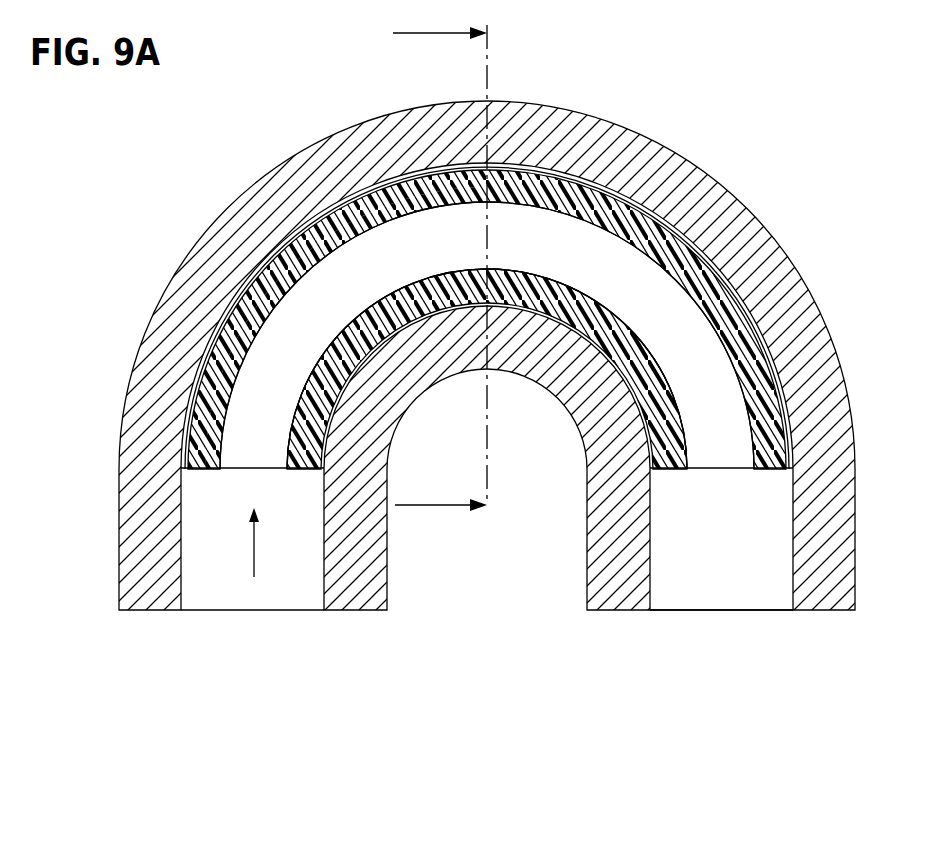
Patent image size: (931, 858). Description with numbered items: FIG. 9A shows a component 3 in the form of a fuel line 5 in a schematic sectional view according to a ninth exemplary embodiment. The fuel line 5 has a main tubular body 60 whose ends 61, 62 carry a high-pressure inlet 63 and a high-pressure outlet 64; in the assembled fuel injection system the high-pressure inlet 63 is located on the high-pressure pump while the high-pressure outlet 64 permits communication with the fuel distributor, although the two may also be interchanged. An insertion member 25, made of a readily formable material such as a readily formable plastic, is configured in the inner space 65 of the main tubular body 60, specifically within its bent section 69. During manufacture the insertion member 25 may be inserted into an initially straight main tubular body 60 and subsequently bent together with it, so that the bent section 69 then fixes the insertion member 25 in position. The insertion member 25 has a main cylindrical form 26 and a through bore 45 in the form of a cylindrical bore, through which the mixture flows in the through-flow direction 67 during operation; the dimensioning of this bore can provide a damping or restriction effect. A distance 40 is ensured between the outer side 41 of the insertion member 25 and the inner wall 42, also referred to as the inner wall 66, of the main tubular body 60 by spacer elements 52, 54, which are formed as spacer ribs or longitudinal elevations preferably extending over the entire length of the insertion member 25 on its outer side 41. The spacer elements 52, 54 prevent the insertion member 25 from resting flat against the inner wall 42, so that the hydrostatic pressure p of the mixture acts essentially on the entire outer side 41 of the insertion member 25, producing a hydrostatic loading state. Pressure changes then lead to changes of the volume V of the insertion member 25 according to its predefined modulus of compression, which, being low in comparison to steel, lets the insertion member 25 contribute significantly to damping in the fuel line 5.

The component 3 is at (467, 343).
The fuel line 5 is at (467, 343).
The insertion member 25 is at (598, 195).
The main cylindrical form 26 is at (650, 200).
The distance 40 is at (462, 276).
The outer side 41 is at (250, 280).
The inner wall 42 is at (345, 195).
The through bore 45 is at (435, 238).
The spacer element 52 is at (608, 496).
The spacer element 54 is at (487, 369).
The main tubular body 60 is at (473, 369).
The end 61 is at (144, 577).
The end 62 is at (829, 577).
The high-pressure inlet 63 is at (153, 593).
The high-pressure outlet 64 is at (825, 583).
The inner space 65 is at (695, 560).
The inner wall 66 is at (325, 548).
The through-flow direction 67 is at (255, 553).
The bent section 69 is at (530, 128).
The pressure p is at (733, 557).
The volume V is at (440, 292).